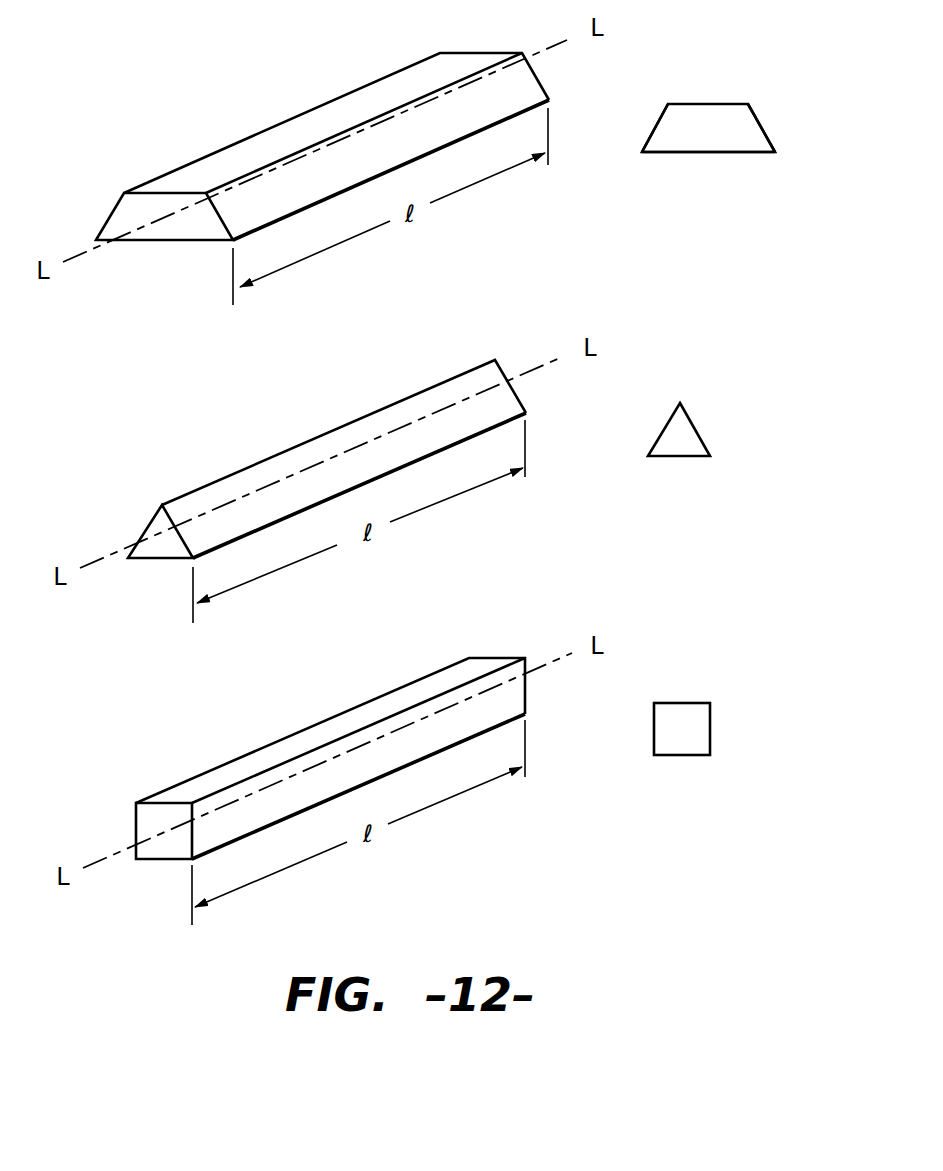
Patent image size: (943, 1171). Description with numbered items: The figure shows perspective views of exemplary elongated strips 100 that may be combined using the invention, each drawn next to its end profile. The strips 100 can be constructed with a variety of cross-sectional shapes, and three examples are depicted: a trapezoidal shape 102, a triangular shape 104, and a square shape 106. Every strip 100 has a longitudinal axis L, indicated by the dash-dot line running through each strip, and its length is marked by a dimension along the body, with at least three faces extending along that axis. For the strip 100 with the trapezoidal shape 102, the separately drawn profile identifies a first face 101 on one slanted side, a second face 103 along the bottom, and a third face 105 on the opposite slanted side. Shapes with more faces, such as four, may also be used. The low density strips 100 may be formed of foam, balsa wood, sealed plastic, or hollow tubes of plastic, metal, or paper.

The elongated strip 100 is at (236, 83).
The first face 101 is at (648, 128).
The trapezoidal cross-sectional shape 102 is at (137, 211).
The second face 103 is at (678, 155).
The triangular cross-sectional shape 104 is at (160, 520).
The third face 105 is at (759, 122).
The square cross-sectional shape 106 is at (680, 734).